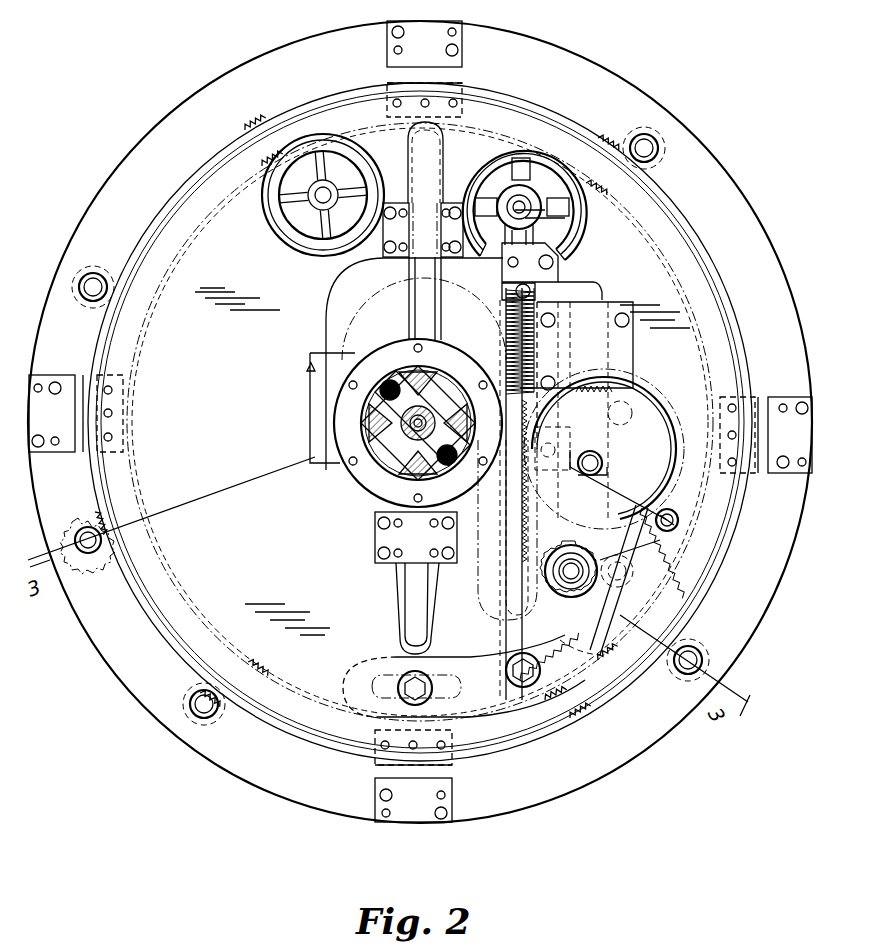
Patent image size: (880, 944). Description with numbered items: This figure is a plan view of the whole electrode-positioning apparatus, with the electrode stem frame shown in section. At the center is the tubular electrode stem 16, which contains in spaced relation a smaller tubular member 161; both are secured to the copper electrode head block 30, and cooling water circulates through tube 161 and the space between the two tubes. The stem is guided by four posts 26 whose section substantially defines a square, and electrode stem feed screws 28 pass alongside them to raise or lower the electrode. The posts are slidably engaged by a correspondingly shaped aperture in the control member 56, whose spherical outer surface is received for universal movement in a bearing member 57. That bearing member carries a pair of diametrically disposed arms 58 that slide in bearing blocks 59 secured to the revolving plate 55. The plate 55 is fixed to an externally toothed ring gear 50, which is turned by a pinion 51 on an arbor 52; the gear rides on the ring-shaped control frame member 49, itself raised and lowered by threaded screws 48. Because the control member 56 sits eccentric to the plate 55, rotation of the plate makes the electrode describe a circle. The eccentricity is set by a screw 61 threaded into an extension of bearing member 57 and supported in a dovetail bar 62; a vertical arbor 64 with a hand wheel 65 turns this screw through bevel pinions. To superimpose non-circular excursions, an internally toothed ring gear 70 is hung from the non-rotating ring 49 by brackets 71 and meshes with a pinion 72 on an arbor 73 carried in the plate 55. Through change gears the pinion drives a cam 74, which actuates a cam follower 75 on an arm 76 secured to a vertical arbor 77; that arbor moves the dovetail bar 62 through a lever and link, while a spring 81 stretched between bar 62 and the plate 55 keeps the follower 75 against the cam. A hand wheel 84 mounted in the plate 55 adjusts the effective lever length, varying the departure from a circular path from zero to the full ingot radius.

The electrode stem 16 is at (404, 413).
The smaller tubular member 161 is at (426, 418).
The posts 26 is at (438, 372).
The electrode stem feed screws 28 is at (383, 384).
The electrode head block 30 is at (390, 455).
The threaded screws 48 is at (90, 282).
The ring-shaped control frame member 49 is at (112, 650).
The externally toothed ring shaped gear 50 is at (92, 512).
The pinion 51 is at (100, 558).
The arbor 52 is at (86, 550).
The plate 55 is at (442, 422).
The control member 56 is at (352, 443).
The bearing member 57 is at (383, 352).
The arms 58 is at (418, 322).
The bearing blocks 59 is at (437, 205).
The screw 61 is at (498, 330).
The bar 62 is at (502, 270).
The arbor 64 is at (522, 204).
The hand wheel 65 is at (575, 226).
The internally toothed ring gear 70 is at (568, 715).
The brackets 71 is at (462, 42).
The pinion 72 is at (630, 604).
The arbor 73 is at (572, 582).
The cam 74 is at (650, 432).
The cam follower 75 is at (670, 510).
The arm 76 is at (670, 548).
The arbor 77 is at (635, 571).
The spring 81 is at (528, 302).
The hand wheel 84 is at (293, 240).